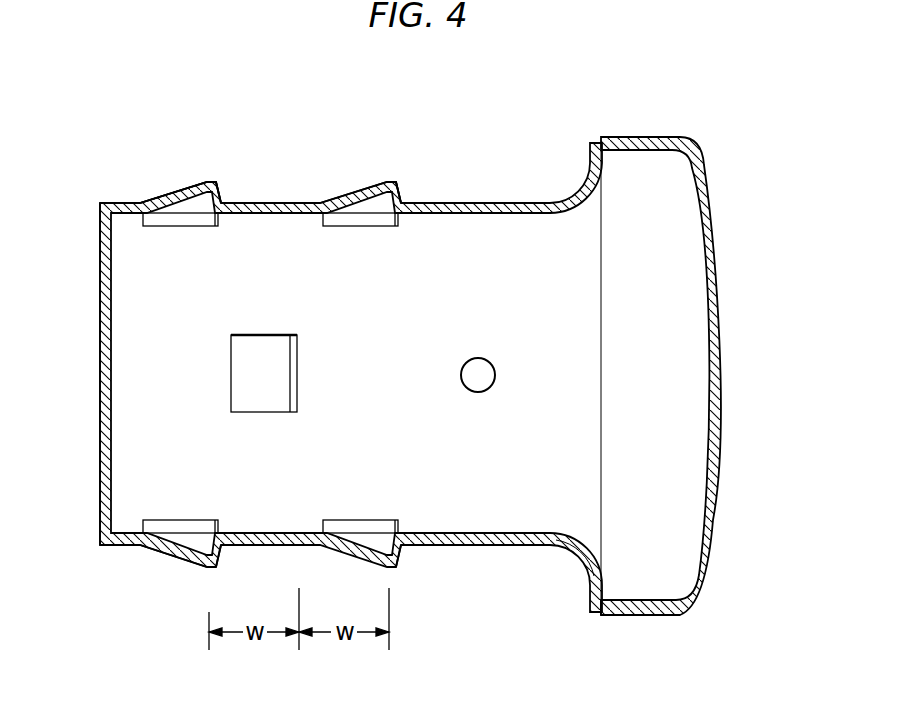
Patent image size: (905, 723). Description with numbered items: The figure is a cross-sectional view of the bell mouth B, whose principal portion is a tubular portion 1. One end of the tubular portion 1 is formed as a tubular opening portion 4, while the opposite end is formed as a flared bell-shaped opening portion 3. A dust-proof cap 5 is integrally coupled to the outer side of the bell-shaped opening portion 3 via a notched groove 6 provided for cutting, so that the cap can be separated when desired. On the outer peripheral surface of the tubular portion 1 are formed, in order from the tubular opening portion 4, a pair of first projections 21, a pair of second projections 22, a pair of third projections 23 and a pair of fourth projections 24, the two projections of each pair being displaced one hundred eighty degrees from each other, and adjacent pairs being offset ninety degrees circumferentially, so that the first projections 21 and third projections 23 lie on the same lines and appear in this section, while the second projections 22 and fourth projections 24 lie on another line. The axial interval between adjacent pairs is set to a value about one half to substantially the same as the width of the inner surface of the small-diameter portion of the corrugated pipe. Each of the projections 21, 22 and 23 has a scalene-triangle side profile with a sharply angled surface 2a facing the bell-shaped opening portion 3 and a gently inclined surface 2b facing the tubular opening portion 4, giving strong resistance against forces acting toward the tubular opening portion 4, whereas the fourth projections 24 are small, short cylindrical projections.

The tubular portion 1 is at (519, 202).
The sharply angled surface 2a is at (232, 194).
The gently inclined surface 2b is at (157, 196).
The first projections 21 is at (207, 178).
The second projections 22 is at (278, 348).
The third projections 23 is at (386, 180).
The fourth projections 24 is at (478, 364).
The bell-shaped opening portion 3 is at (574, 565).
The tubular opening portion 4 is at (100, 386).
The dust-proof cap 5 is at (695, 268).
The notched groove 6 is at (598, 616).
The bell mouth B is at (641, 116).